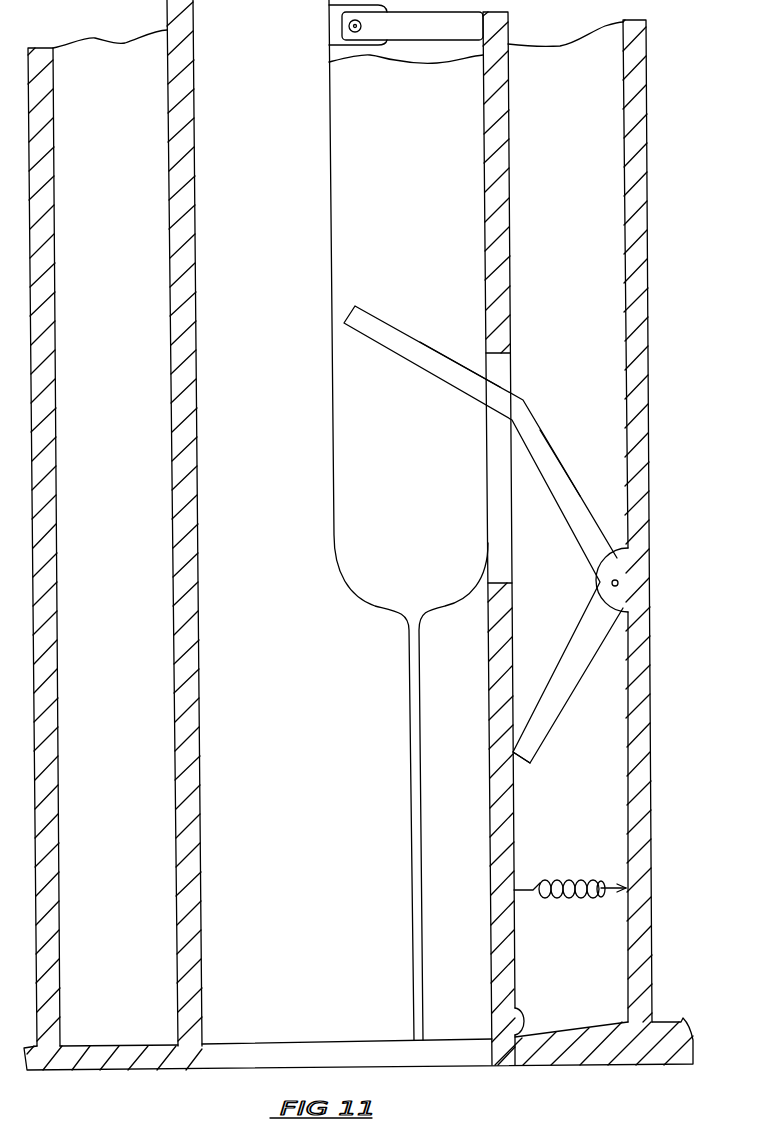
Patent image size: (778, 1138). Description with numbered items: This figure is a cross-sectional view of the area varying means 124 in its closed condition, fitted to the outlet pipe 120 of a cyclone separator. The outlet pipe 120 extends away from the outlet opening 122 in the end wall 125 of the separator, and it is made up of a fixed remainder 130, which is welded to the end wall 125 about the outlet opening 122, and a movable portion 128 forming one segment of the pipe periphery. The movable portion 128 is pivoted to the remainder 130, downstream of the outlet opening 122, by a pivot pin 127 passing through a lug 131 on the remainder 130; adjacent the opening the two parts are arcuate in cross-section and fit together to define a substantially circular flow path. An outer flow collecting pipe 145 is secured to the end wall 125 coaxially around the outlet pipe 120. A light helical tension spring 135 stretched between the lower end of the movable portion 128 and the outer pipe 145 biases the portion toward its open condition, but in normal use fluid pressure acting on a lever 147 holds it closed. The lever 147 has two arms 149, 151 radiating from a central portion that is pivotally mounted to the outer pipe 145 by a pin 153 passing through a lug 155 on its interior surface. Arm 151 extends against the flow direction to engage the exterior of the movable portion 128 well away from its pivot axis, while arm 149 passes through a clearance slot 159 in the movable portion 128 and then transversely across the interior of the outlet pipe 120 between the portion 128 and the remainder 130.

The outlet pipe 120 is at (160, 523).
The outlet opening 122 is at (253, 1040).
The area varying means 124 is at (517, 525).
The end wall 125 is at (110, 1072).
The pivot pin 127 is at (360, 32).
The movable portion 128 is at (497, 636).
The remainder of the pipe 130 is at (176, 722).
The lug 131 is at (338, 42).
The helical tension spring 135 is at (567, 902).
The outer flow collecting pipe 145 is at (46, 437).
The lever 147 is at (420, 330).
The lever arm 149 is at (430, 372).
The lever arm 151 is at (530, 750).
The pin 153 is at (619, 584).
The lug 155 is at (621, 552).
The clearance slot 159 is at (505, 378).